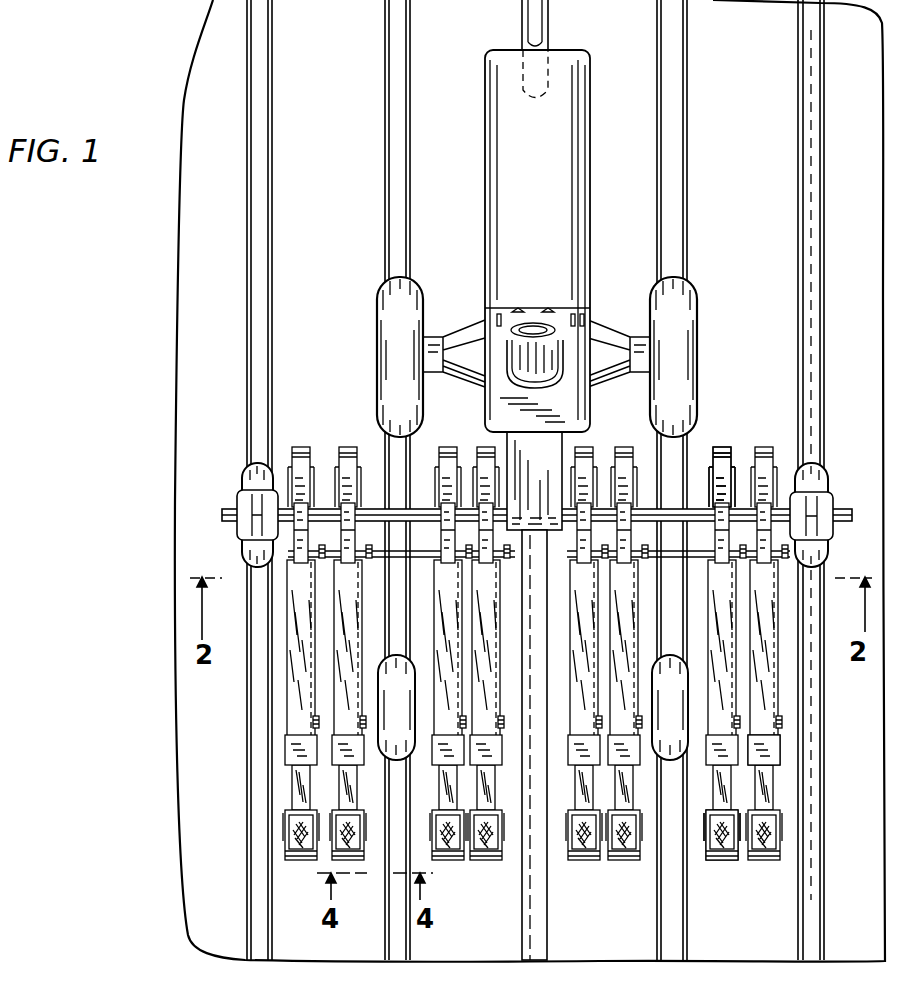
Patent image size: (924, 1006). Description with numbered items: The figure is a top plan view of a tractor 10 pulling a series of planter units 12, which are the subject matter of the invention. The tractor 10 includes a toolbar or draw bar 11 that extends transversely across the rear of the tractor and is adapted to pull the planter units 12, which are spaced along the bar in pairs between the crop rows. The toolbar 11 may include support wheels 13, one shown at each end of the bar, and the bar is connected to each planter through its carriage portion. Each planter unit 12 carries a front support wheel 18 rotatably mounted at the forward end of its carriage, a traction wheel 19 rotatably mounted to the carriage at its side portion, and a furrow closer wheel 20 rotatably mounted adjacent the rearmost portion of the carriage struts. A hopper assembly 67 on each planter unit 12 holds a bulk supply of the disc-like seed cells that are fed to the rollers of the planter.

The tractor 10 is at (581, 56).
The toolbar 11 is at (649, 510).
The planter unit 12 is at (572, 628).
The support wheel 13 is at (246, 468).
The front support wheel 18 is at (716, 448).
The traction wheel 19 is at (677, 735).
The furrow closer wheel 20 is at (723, 858).
The hopper assembly 67 is at (781, 753).